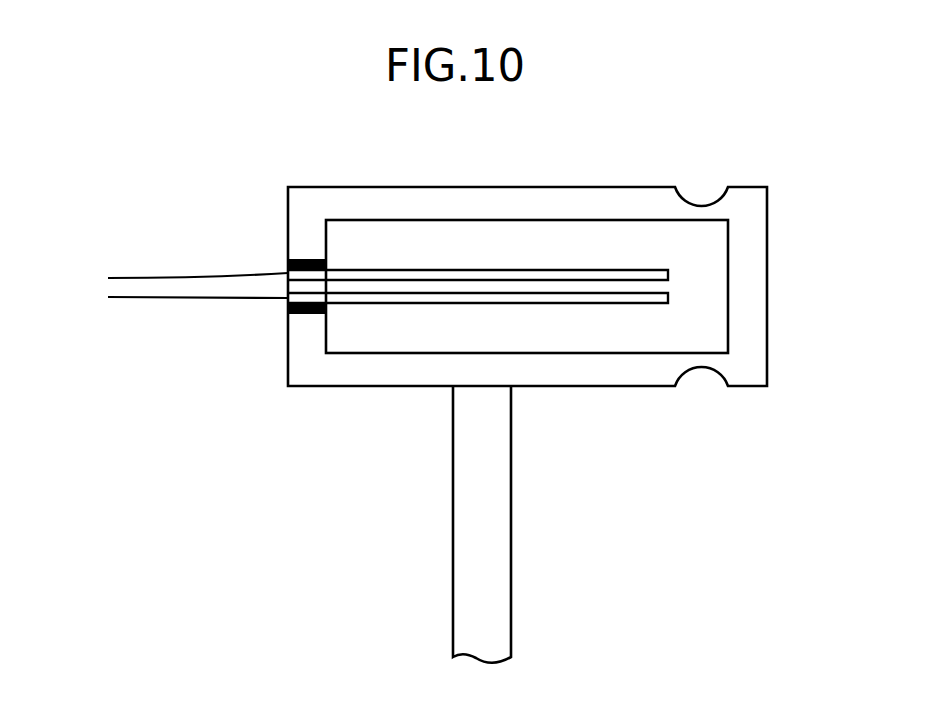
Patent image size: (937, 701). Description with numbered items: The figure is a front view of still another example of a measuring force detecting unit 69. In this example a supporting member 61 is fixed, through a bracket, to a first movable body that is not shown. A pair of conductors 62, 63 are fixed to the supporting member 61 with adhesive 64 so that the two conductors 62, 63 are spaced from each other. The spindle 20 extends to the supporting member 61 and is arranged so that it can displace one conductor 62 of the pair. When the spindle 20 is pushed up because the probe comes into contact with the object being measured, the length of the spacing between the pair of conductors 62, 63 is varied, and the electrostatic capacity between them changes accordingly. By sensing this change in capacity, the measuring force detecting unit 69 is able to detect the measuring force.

The measuring force detecting unit 69 is at (646, 164).
The supporting member 61 is at (760, 349).
The conductor 62 is at (378, 304).
The conductor 63 is at (371, 270).
The adhesive 64 is at (288, 267).
The spindle 20 is at (500, 563).